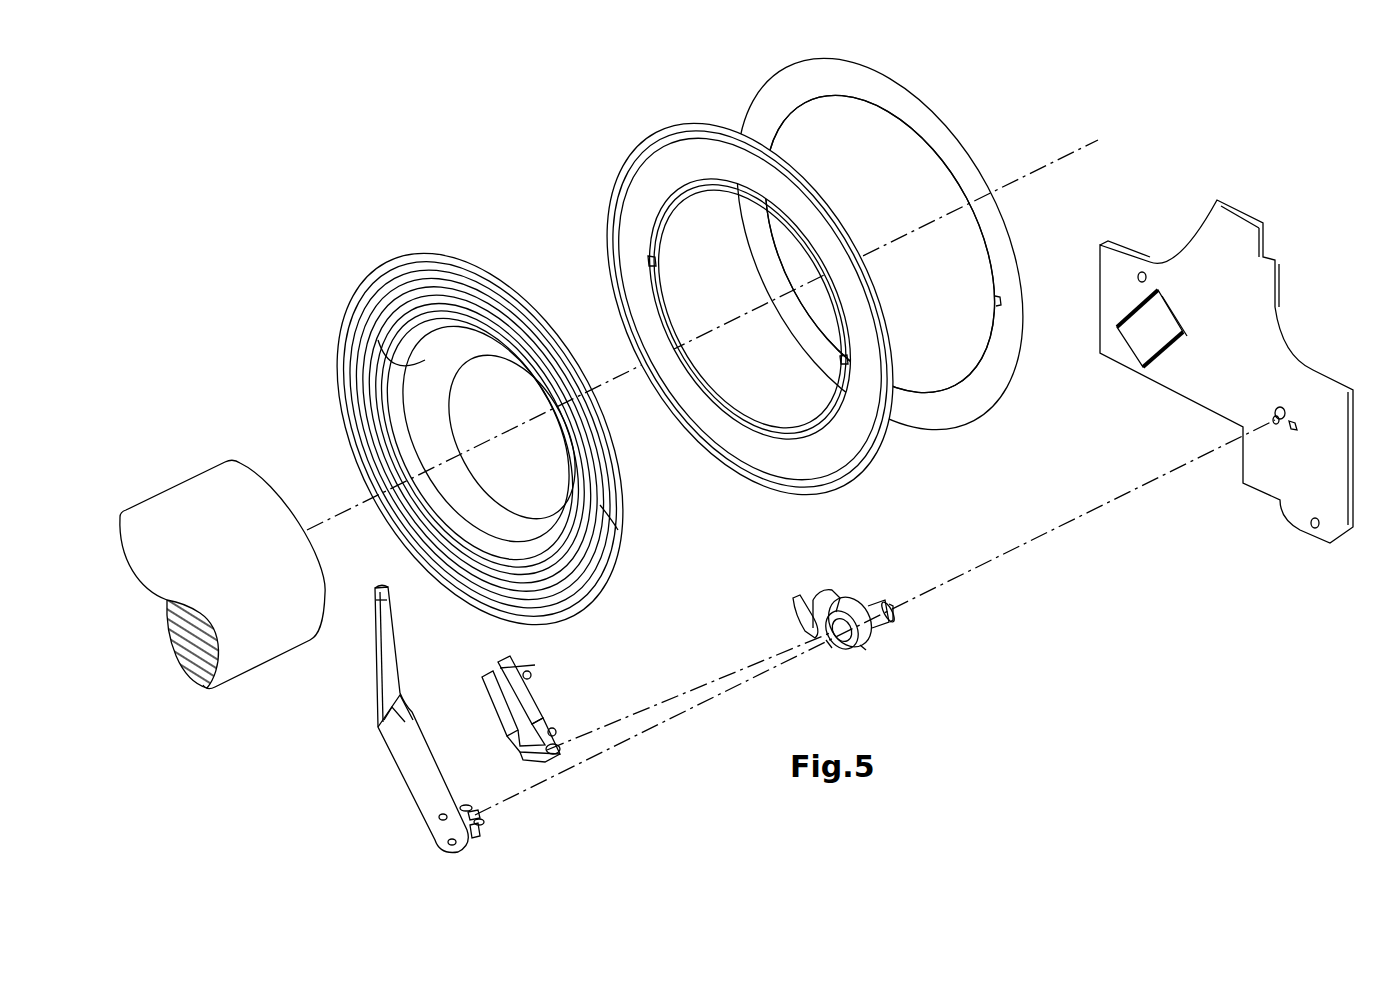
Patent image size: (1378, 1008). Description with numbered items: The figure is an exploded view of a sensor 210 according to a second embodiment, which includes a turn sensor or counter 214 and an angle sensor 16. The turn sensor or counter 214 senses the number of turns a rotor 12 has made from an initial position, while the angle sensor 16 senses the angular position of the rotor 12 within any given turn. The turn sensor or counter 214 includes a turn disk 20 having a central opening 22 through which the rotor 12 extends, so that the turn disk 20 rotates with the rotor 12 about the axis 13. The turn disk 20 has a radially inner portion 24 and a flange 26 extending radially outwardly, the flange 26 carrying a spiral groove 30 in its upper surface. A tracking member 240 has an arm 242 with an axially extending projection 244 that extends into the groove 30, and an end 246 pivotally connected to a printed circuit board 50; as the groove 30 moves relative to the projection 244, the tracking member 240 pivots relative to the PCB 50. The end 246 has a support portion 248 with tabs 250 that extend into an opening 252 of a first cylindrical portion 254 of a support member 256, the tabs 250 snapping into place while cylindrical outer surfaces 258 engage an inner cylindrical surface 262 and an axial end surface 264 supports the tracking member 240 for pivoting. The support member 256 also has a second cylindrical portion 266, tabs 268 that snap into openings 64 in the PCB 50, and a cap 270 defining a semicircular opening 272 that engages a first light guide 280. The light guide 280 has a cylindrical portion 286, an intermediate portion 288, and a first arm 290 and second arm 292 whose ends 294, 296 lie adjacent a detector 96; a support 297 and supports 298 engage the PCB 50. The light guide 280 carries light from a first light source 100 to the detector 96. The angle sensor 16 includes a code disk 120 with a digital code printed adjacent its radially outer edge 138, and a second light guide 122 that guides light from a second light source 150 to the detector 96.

The rotor 12 is at (207, 507).
The axis 13 is at (330, 515).
The angle sensor 16 is at (814, 276).
The turn disk 20 is at (480, 418).
The central opening 22 is at (380, 348).
The radially inner portion 24 is at (405, 338).
The flange 26 is at (493, 293).
The spiral groove 30 is at (612, 522).
The printed circuit board 50 is at (1226, 363).
The openings 64 is at (1275, 410).
The detector 96 is at (1145, 335).
The first light source 100 is at (1280, 424).
The code disk 120 is at (879, 244).
The second light guide 122 is at (702, 115).
The radially outer edge 138 is at (977, 388).
The second light source 150 is at (1142, 272).
The sensor 210 is at (641, 696).
The turn sensor or counter 214 is at (501, 708).
The tracking member 240 is at (443, 708).
The arm 242 is at (382, 680).
The axially extending projection 244 is at (385, 590).
The end 246 is at (437, 830).
The support portion 248 is at (477, 837).
The tabs 250 is at (468, 805).
The opening 252 is at (835, 650).
The first cylindrical portion 254 is at (870, 645).
The support member 256 is at (849, 618).
The cylindrical outer surfaces 258 is at (480, 815).
The inner cylindrical surface 262 is at (827, 640).
The axial end surface 264 is at (862, 648).
The second cylindrical portion 266 is at (830, 600).
The tabs 268 is at (895, 618).
The cap 270 is at (800, 620).
The semicircular opening 272 is at (822, 628).
The first light guide 280 is at (547, 708).
The cylindrical portion 286 is at (560, 750).
The intermediate portion 288 is at (545, 757).
The first arm 290 is at (492, 705).
The second arm 292 is at (512, 675).
The end 294 is at (485, 680).
The end 296 is at (510, 675).
The support 297 is at (553, 735).
The supports 298 is at (535, 665).